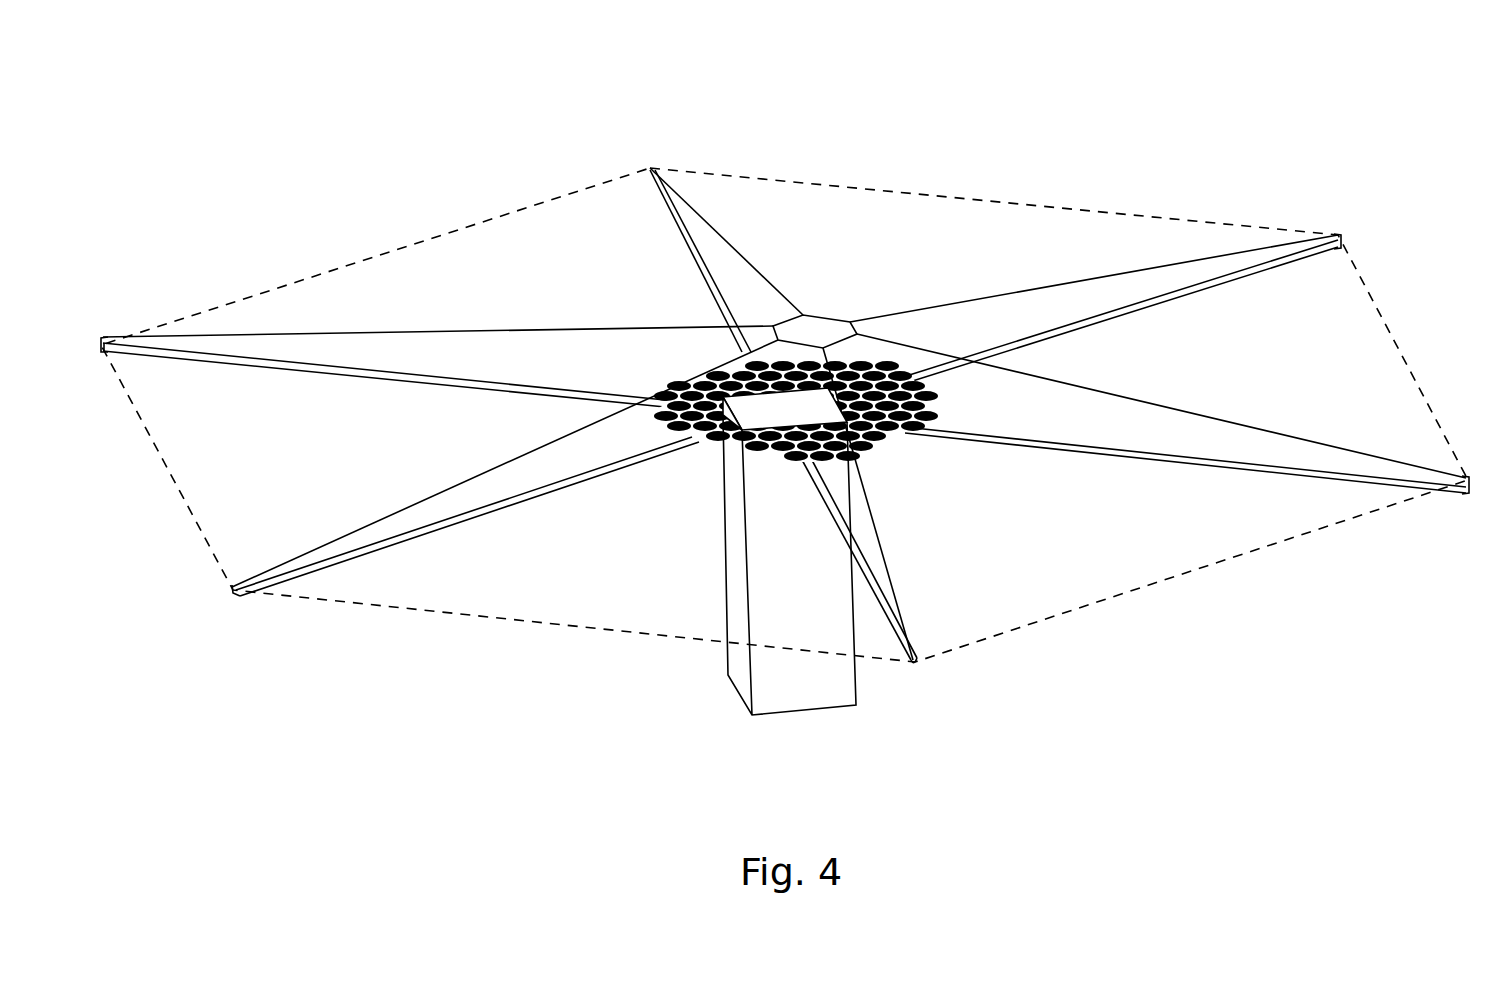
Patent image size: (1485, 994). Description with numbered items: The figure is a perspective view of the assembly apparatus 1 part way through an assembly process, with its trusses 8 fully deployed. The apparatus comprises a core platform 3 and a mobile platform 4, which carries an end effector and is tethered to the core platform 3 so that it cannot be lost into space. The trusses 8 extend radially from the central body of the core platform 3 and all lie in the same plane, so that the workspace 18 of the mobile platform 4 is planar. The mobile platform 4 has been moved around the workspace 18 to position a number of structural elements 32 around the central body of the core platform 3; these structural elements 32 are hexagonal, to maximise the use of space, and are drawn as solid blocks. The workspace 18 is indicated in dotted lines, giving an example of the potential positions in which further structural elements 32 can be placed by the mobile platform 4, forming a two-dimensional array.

The assembly apparatus 1 is at (1094, 148).
The core platform 3 is at (766, 643).
The mobile platform 4 is at (813, 332).
The truss 8 is at (664, 203).
The workspace 18 is at (1270, 398).
The structural elements 32 is at (865, 372).